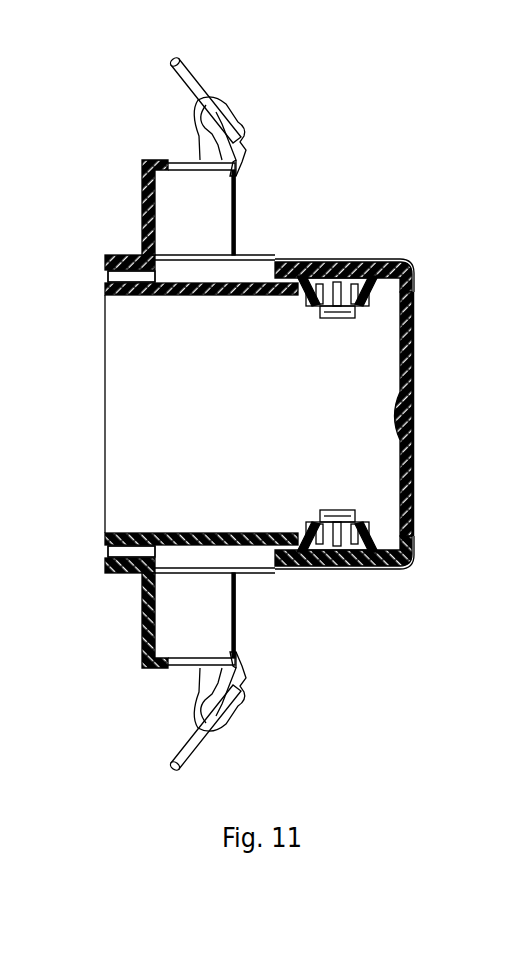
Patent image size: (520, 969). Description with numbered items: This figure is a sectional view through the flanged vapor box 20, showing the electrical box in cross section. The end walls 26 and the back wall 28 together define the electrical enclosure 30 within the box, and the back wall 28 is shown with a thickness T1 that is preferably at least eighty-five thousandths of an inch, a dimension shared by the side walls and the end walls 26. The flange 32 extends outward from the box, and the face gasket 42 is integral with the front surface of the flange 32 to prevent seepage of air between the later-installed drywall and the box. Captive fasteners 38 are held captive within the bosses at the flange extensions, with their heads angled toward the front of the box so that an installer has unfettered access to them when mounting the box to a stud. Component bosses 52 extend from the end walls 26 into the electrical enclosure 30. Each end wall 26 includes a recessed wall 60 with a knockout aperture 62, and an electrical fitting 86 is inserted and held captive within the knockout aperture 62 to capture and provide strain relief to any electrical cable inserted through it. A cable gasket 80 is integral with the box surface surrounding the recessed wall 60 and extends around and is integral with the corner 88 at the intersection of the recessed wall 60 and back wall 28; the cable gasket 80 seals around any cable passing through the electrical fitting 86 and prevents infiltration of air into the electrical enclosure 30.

The flanged vapor box 20 is at (66, 152).
The end walls 26 is at (215, 296).
The back wall 28 is at (414, 358).
The electrical enclosure 30 is at (259, 423).
The flange 32 is at (156, 205).
The captive fasteners 38 is at (190, 68).
The face gasket 42 is at (142, 210).
The component bosses 52 is at (108, 277).
The recessed wall 60 is at (297, 278).
The knockout aperture 62 is at (302, 532).
The cable gasket 80 is at (414, 284).
The electrical fitting 86 is at (337, 284).
The corner 88 is at (408, 276).
The thickness T1 is at (353, 450).